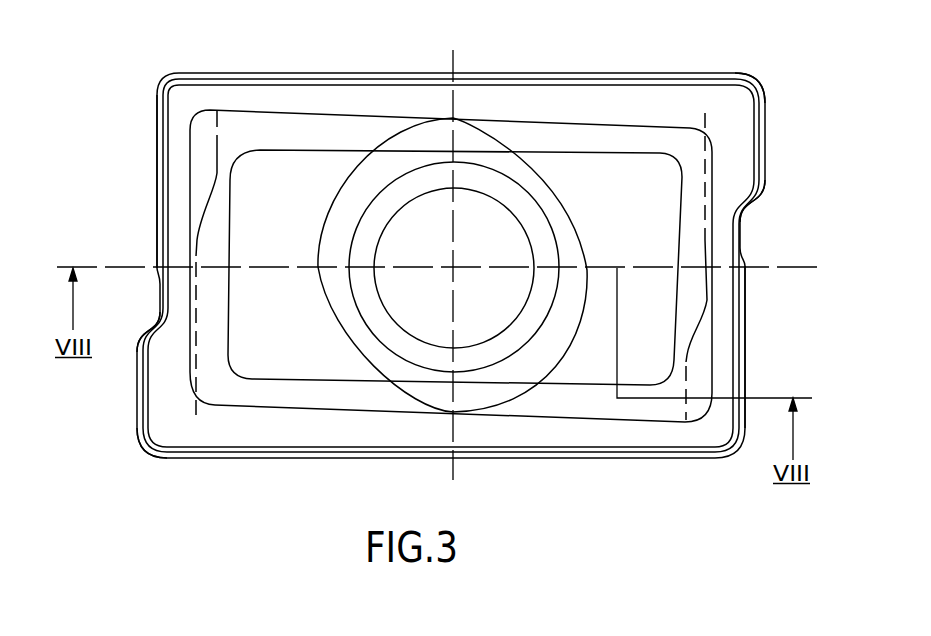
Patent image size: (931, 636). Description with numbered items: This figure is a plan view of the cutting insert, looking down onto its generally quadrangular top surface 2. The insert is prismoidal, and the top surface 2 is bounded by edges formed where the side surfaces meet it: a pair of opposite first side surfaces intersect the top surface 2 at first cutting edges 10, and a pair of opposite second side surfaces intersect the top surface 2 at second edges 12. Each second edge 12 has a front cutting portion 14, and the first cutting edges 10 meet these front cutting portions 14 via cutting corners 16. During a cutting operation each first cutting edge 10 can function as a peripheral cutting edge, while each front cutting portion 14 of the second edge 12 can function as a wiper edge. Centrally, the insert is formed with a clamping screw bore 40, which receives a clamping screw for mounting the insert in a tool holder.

The top surface 2 is at (600, 195).
The first cutting edges 10 is at (550, 82).
The second edges 12 is at (160, 153).
The front cutting portion 14 is at (767, 140).
The cutting corners 16 is at (758, 93).
The clamping screw bore 40 is at (506, 246).